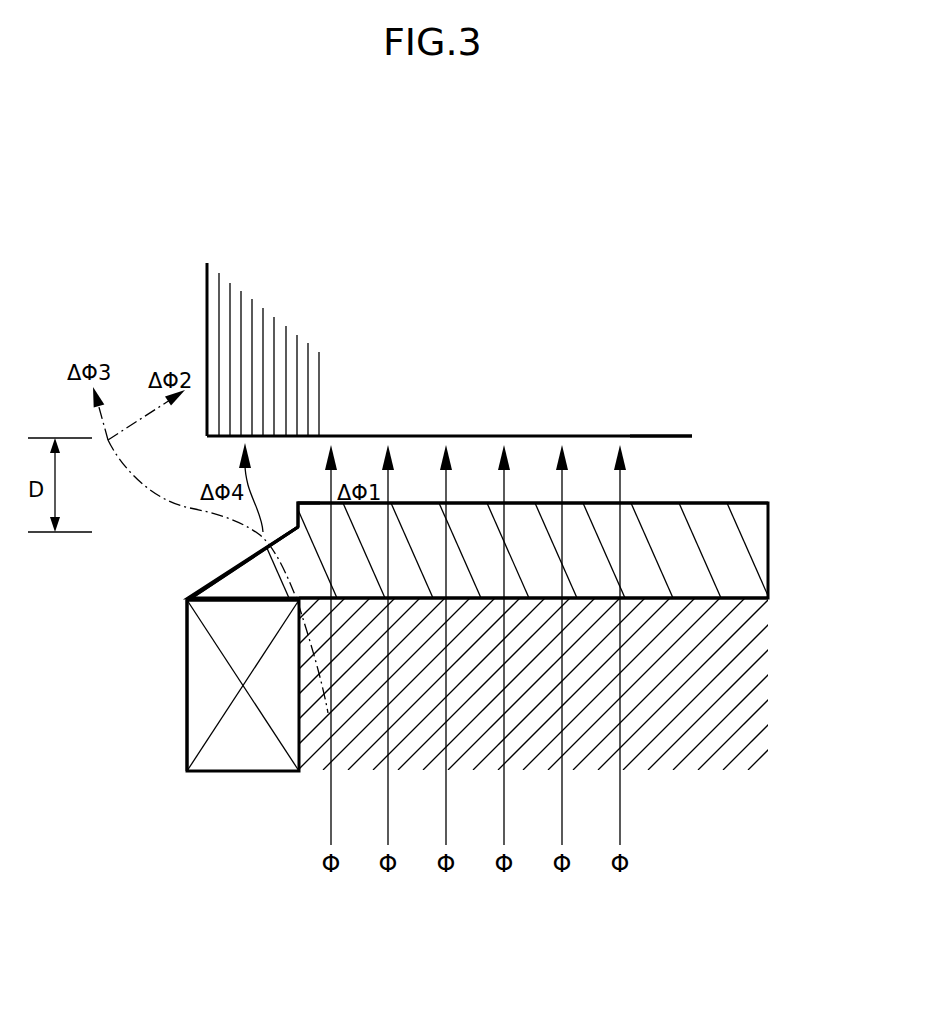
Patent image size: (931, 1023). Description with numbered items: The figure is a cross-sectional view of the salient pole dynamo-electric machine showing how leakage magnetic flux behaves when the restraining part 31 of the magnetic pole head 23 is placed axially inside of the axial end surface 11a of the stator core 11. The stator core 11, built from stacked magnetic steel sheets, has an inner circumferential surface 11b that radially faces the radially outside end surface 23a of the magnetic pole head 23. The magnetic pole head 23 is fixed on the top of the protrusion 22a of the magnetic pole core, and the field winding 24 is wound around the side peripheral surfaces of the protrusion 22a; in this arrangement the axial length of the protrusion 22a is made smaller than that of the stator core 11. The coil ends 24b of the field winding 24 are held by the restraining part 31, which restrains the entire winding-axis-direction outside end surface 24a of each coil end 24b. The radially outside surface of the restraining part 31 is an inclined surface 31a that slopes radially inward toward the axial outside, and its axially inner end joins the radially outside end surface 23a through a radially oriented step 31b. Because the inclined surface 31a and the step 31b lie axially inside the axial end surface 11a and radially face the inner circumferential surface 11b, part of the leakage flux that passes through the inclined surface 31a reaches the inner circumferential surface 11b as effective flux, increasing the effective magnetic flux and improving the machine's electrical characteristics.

The stator core 11 is at (673, 440).
The axial end surface of the stator core 11a is at (207, 285).
The inner circumferential surface of the stator core 11b is at (641, 436).
The protrusion 22a is at (733, 667).
The magnetic pole head 23 is at (756, 564).
The radially outside end surface 23a is at (747, 503).
The field winding 24 is at (176, 741).
The winding-axis-direction outside end surface 24a is at (190, 598).
The coil end 24b is at (187, 665).
The restraining part 31 is at (196, 578).
The inclined surface 31a is at (233, 568).
The step 31b is at (297, 517).